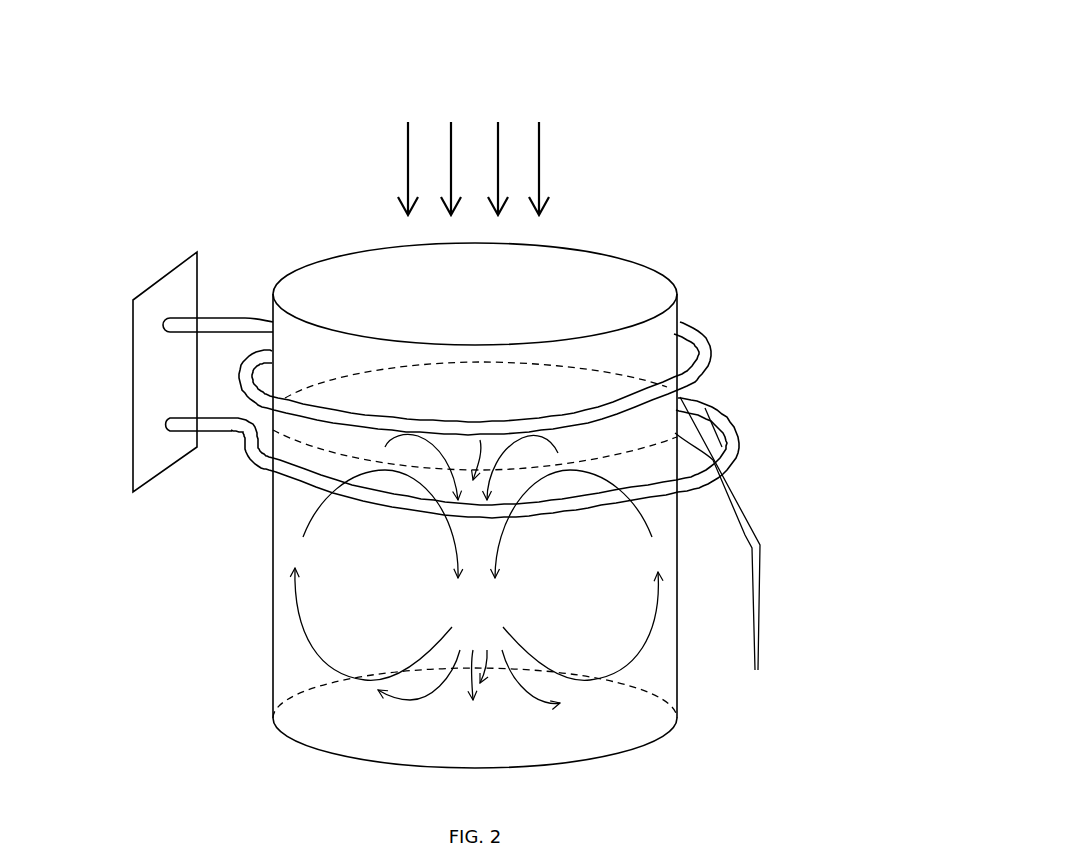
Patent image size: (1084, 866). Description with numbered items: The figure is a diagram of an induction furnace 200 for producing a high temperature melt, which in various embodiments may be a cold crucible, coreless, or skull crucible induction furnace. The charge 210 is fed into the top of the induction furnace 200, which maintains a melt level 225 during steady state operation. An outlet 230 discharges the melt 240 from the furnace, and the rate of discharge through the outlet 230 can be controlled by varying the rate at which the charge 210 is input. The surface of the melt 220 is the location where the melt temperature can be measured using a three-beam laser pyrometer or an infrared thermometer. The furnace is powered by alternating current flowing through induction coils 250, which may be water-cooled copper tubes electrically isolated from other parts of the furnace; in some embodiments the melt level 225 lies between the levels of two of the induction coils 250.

The induction furnace 200 is at (457, 33).
The charge 210 is at (473, 141).
The surface of the melt 220 is at (483, 402).
The melt level 225 is at (308, 448).
The outlet 230 is at (749, 503).
The melt 240 is at (476, 568).
The induction coils 250 is at (220, 412).